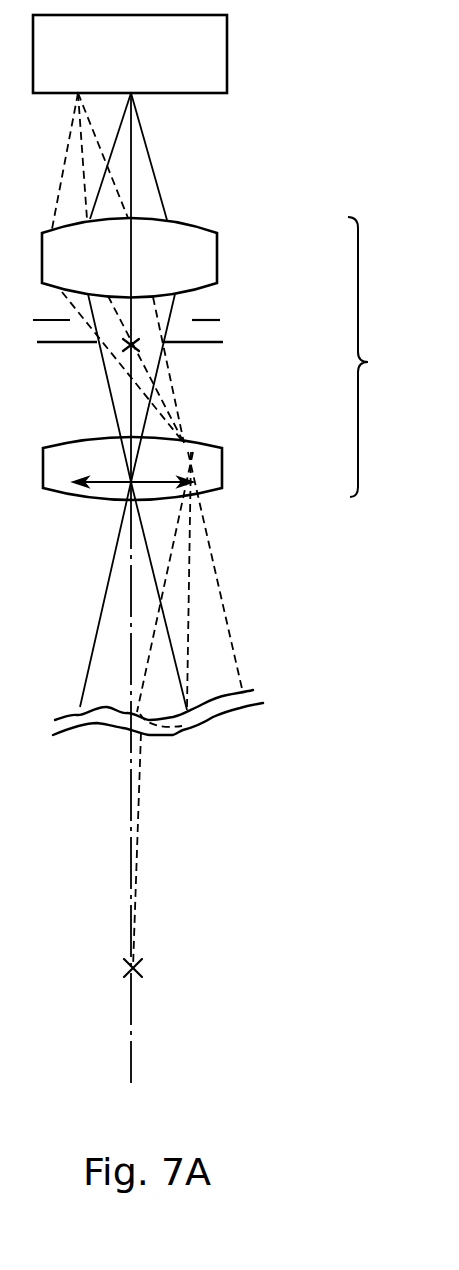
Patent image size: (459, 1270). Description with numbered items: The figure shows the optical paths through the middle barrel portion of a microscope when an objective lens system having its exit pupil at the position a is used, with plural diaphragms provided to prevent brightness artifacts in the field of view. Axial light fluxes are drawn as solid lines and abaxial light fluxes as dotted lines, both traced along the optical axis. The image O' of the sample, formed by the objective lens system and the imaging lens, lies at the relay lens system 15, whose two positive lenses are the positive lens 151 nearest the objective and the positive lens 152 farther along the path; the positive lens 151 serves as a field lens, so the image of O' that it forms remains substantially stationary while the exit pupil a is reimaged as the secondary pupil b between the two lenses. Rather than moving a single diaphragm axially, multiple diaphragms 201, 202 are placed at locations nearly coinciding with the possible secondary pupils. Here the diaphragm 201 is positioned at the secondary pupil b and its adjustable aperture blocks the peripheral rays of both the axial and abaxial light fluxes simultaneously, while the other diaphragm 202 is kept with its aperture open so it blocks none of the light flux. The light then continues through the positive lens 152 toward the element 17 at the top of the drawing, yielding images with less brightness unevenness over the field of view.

The light detector 17 is at (228, 50).
The positive lens 152 is at (217, 247).
The positive lens 151 is at (215, 470).
The relay lens system 15 is at (383, 357).
The diaphragm 202 is at (207, 318).
The diaphragm 201 is at (202, 343).
The secondary pupil b is at (131, 345).
The exit pupil a is at (147, 968).
The image of the sample O' is at (87, 519).